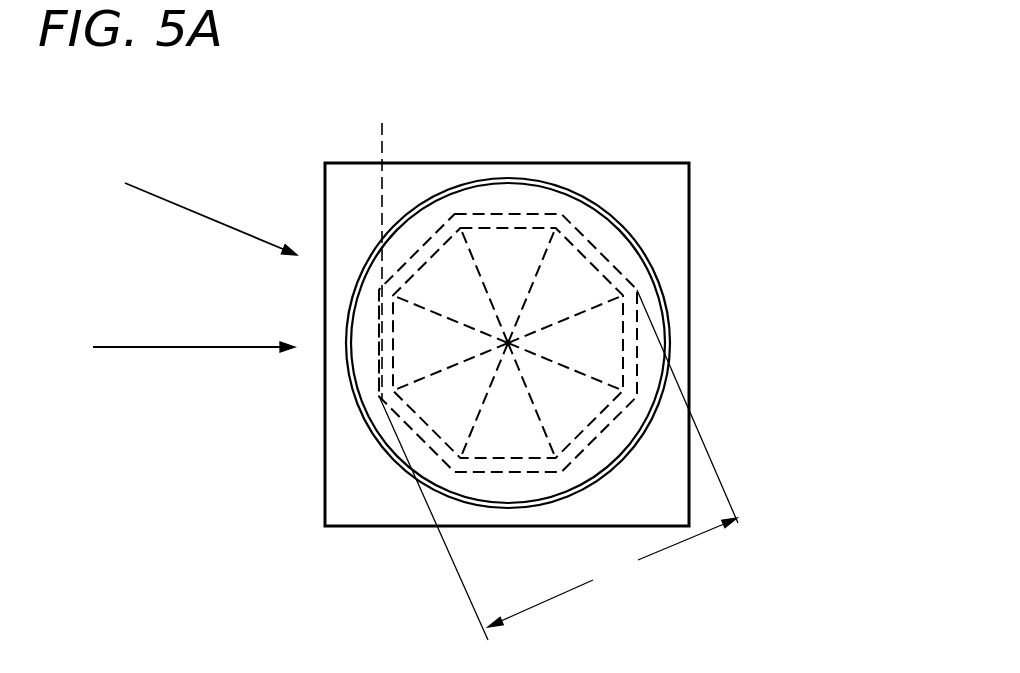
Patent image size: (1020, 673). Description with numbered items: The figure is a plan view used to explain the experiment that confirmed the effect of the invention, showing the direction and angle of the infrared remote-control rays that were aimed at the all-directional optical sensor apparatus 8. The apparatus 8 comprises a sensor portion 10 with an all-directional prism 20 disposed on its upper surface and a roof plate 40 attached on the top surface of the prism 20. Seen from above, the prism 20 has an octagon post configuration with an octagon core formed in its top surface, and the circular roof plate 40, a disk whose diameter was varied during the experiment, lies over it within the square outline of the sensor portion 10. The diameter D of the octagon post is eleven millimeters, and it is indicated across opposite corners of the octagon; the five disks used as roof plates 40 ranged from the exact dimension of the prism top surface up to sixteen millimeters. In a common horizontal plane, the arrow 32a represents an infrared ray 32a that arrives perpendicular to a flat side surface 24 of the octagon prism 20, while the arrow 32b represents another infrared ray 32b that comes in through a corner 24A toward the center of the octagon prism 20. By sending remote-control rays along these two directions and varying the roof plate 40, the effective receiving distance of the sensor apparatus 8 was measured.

The all-directional optical sensor apparatus 8 is at (690, 188).
The sensor portion 10 is at (427, 195).
The roof plate 40 is at (535, 213).
The all-directional prism 20 is at (618, 267).
The side surface 24 is at (380, 350).
The corner 24A is at (382, 245).
The infrared ray 32a is at (157, 347).
The infrared ray 32b is at (197, 212).
The diameter of the octagon post D is at (558, 465).